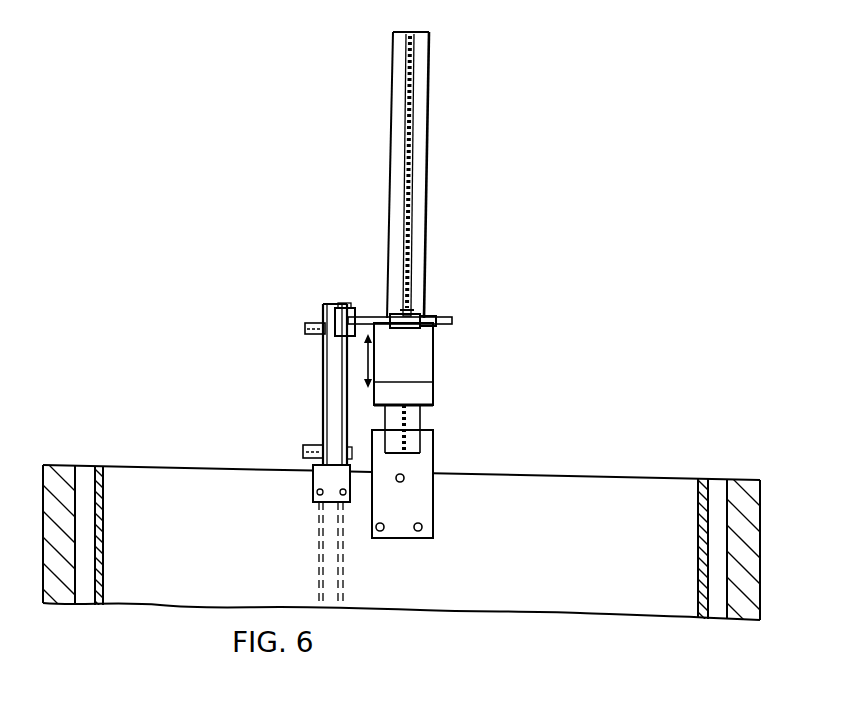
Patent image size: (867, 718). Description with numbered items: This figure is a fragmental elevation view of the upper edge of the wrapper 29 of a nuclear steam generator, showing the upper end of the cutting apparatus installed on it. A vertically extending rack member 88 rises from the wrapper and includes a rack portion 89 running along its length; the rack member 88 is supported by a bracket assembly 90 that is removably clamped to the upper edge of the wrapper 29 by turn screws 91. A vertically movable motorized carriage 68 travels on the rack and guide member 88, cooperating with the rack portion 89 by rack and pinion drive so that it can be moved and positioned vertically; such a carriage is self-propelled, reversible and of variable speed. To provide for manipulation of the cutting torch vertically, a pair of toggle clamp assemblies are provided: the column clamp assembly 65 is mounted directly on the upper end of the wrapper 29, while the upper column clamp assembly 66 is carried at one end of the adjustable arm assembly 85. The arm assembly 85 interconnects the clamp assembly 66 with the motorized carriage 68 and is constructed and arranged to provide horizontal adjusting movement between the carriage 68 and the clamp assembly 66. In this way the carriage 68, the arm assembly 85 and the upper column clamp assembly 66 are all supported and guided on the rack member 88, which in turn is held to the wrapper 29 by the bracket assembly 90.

The wrapper 29 is at (163, 477).
The column clamp assembly 65 is at (303, 450).
The upper column clamp assembly 66 is at (333, 324).
The motorized carriage 68 is at (424, 362).
The adjustable arm assembly 85 is at (366, 320).
The rack member 88 is at (420, 100).
The rack portion 89 is at (410, 34).
The bracket assembly 90 is at (415, 502).
The turn screws 91 is at (398, 482).